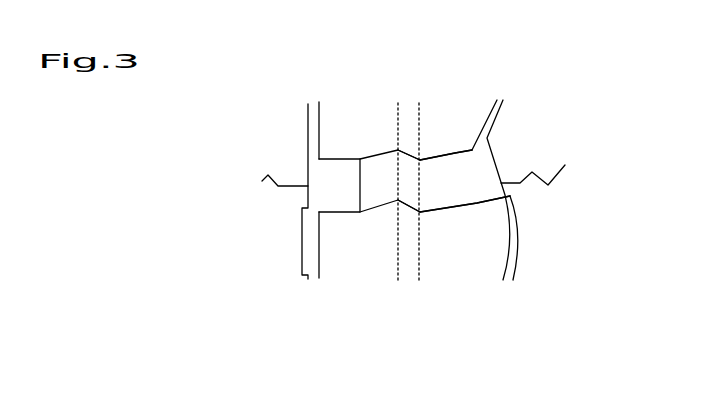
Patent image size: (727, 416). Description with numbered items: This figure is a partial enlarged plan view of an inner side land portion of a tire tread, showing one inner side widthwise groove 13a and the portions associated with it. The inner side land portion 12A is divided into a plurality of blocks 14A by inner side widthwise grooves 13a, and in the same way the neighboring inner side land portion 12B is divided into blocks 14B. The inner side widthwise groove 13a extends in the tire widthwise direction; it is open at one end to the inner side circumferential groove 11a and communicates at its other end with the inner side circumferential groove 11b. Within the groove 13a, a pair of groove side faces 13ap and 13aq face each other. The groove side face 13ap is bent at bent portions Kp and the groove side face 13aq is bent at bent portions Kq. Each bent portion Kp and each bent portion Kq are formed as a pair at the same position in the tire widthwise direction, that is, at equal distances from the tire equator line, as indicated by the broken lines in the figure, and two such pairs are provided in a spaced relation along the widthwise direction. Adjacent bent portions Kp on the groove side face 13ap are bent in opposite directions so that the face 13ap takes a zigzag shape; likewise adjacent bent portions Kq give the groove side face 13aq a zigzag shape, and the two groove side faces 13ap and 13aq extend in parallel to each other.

The inner side circumferential groove 11a is at (498, 120).
The inner side circumferential groove 11b is at (308, 140).
The inner side land portion 12A is at (527, 193).
The inner side land portion 12B is at (239, 220).
The inner side widthwise groove 13a is at (430, 193).
The groove side face 13ap is at (455, 154).
The groove side face 13aq is at (484, 203).
The block 14A is at (410, 308).
The block 14B is at (288, 198).
The bent portion Kp is at (398, 150).
The bent portion Kq is at (398, 200).